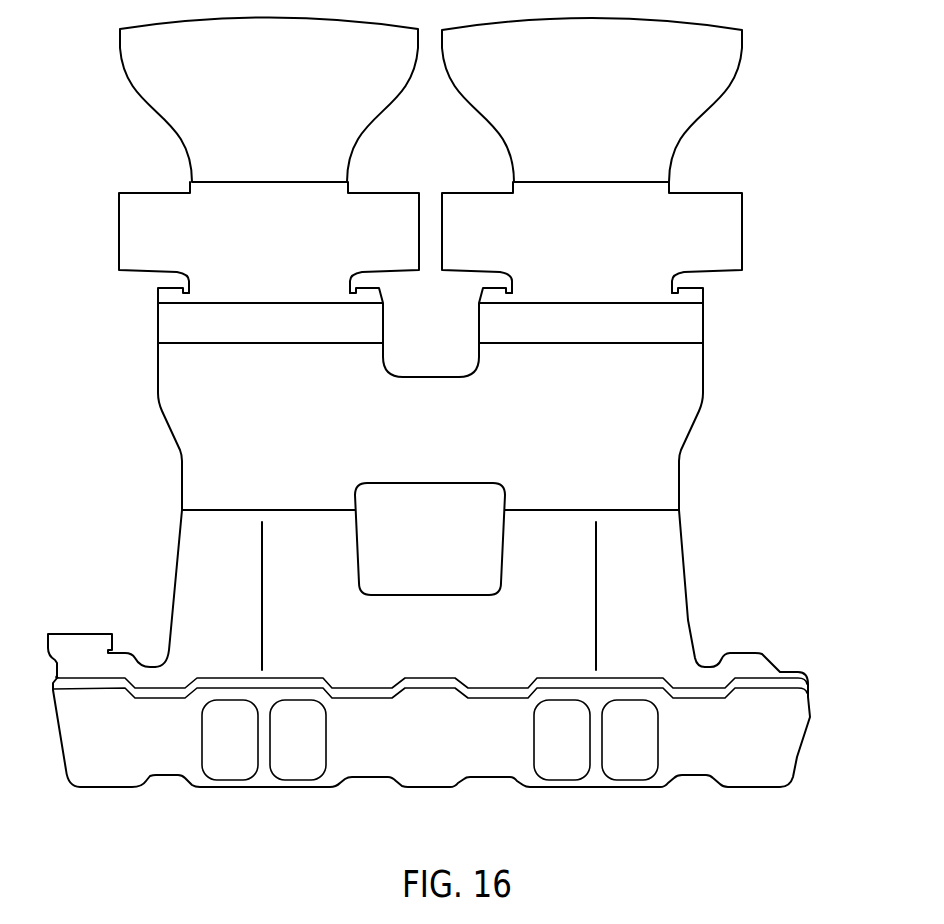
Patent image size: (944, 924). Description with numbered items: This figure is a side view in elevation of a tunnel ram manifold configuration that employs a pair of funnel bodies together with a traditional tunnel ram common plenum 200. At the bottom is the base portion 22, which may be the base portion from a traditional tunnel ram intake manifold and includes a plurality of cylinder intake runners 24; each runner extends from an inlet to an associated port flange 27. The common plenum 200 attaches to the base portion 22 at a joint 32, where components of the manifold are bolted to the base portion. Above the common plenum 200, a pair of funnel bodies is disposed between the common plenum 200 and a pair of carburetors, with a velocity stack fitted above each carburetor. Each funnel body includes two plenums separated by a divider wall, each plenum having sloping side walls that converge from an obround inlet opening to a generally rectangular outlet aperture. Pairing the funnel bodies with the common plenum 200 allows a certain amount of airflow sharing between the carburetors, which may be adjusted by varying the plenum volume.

The common plenum 200 is at (656, 431).
The joint 32 is at (182, 509).
The intake runner 24 is at (236, 548).
The base portion 22 is at (747, 652).
The port flange 27 is at (757, 732).